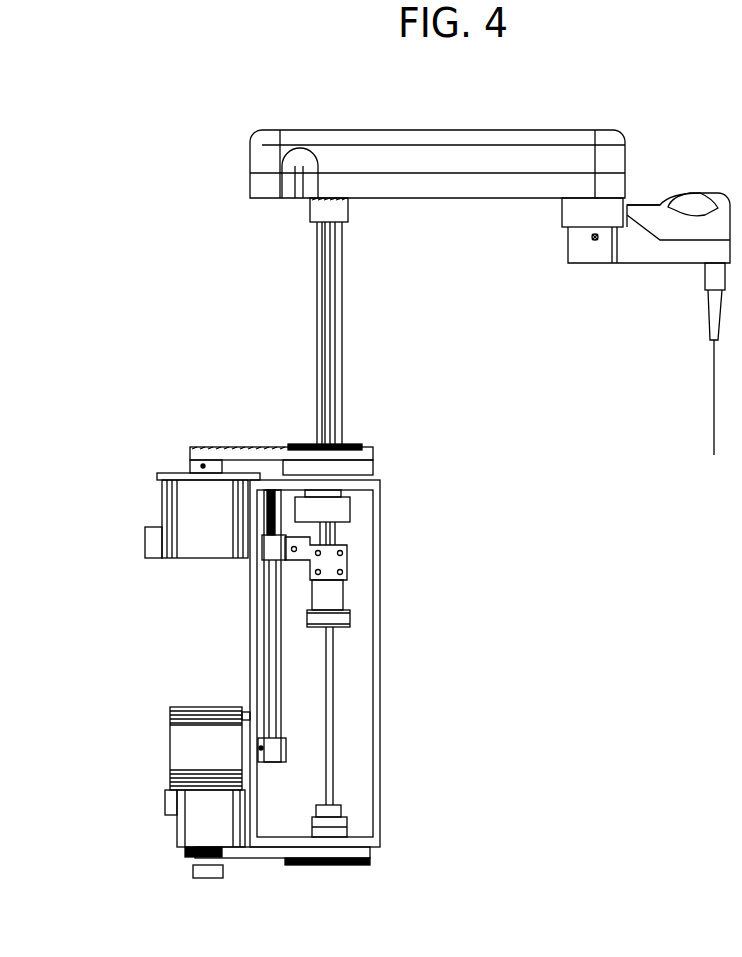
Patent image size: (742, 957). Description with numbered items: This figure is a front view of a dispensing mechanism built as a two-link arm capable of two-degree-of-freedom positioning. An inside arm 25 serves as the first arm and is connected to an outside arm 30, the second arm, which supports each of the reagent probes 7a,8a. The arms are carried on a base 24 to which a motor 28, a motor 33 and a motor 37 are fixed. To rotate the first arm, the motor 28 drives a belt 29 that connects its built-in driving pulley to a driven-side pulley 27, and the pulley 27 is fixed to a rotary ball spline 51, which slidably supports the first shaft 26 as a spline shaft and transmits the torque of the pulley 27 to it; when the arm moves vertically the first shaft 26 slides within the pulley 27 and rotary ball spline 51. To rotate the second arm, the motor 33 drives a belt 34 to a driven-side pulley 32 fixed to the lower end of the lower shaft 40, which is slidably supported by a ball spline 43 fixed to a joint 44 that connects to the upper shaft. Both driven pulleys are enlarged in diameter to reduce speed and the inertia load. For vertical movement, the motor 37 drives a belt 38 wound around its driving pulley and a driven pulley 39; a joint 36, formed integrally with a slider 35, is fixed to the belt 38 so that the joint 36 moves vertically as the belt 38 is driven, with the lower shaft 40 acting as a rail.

The inside arm 25 is at (460, 199).
The first shaft 26 is at (342, 364).
The pulley 27 is at (355, 449).
The belt 29 is at (276, 447).
The pulley 39 is at (264, 502).
The rotary ball spline 51 is at (368, 508).
The slider 35 is at (350, 555).
The joint 44 is at (343, 595).
The ball spline 43 is at (350, 617).
The lower shaft 40 is at (334, 675).
The base 24 is at (381, 730).
The motor 28 is at (144, 540).
The joint 36 is at (262, 556).
The belt 38 is at (270, 668).
The motor 37 is at (172, 740).
The motor 33 is at (172, 802).
The belt 34 is at (258, 860).
The pulley 32 is at (345, 866).
The outside arm 30 is at (632, 264).
The reagent probes 7a,8a is at (712, 410).